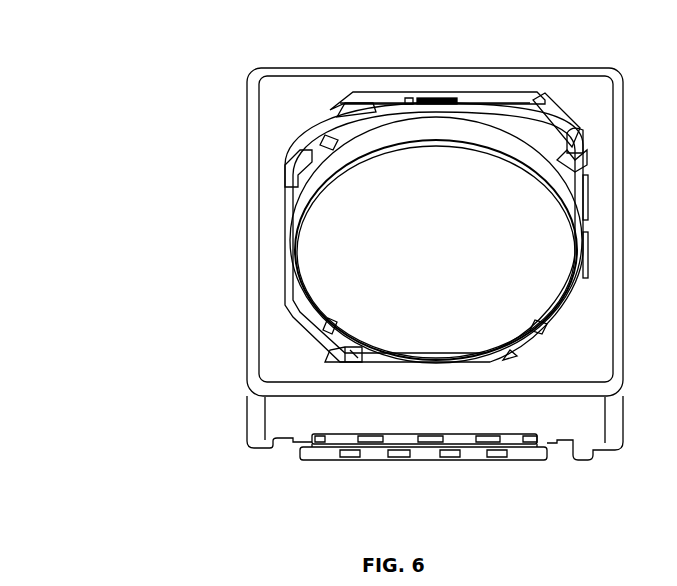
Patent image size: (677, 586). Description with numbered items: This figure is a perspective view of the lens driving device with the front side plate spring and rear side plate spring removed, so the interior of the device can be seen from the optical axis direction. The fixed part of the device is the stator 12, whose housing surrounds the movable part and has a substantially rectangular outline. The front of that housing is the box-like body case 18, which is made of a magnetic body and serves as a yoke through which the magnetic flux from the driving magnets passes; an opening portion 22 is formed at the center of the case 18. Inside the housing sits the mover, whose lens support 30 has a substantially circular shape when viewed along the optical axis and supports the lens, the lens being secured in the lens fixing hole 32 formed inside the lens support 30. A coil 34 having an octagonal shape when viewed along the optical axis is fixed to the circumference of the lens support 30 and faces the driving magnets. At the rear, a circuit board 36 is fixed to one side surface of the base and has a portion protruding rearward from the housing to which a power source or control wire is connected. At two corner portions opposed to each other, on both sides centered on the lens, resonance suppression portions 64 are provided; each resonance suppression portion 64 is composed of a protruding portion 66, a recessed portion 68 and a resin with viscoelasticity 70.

The stator 12 is at (633, 108).
The body case 18 is at (603, 223).
The opening portion 22 is at (370, 112).
The lens support 30 is at (567, 293).
The lens fixing hole 32 is at (567, 273).
The coil 34 is at (500, 94).
The circuit board 36 is at (523, 453).
The resonance suppression portion 64 is at (552, 112).
The protruding portion 66 is at (556, 132).
The recessed portion 68 is at (585, 162).
The resin with viscoelasticity 70 is at (585, 140).